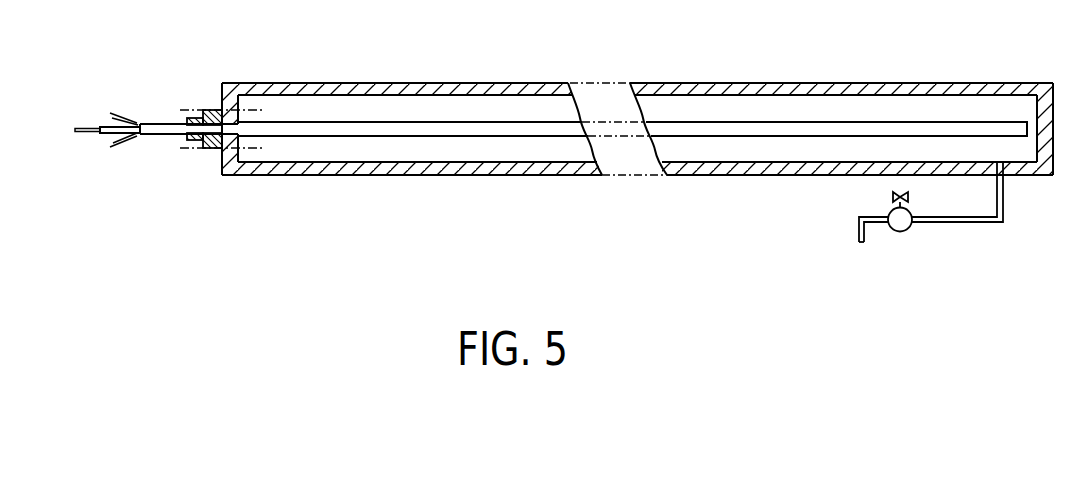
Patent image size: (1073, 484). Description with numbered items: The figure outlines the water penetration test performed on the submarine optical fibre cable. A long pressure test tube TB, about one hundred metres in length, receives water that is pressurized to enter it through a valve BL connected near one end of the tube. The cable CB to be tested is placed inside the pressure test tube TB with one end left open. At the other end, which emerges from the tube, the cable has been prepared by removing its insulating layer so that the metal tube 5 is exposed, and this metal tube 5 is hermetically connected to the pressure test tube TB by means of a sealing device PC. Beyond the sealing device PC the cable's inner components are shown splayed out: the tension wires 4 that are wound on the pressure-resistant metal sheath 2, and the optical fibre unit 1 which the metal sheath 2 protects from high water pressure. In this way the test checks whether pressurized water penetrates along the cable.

The optical fibre unit 1 is at (91, 126).
The pressure-resistant metal sheath 2 is at (120, 126).
The tension wires 4 is at (118, 150).
The metal tube 5 is at (168, 135).
The sealing device PC is at (212, 108).
The pressure test tube TB is at (430, 93).
The cable CB is at (720, 122).
The valve BL is at (900, 225).